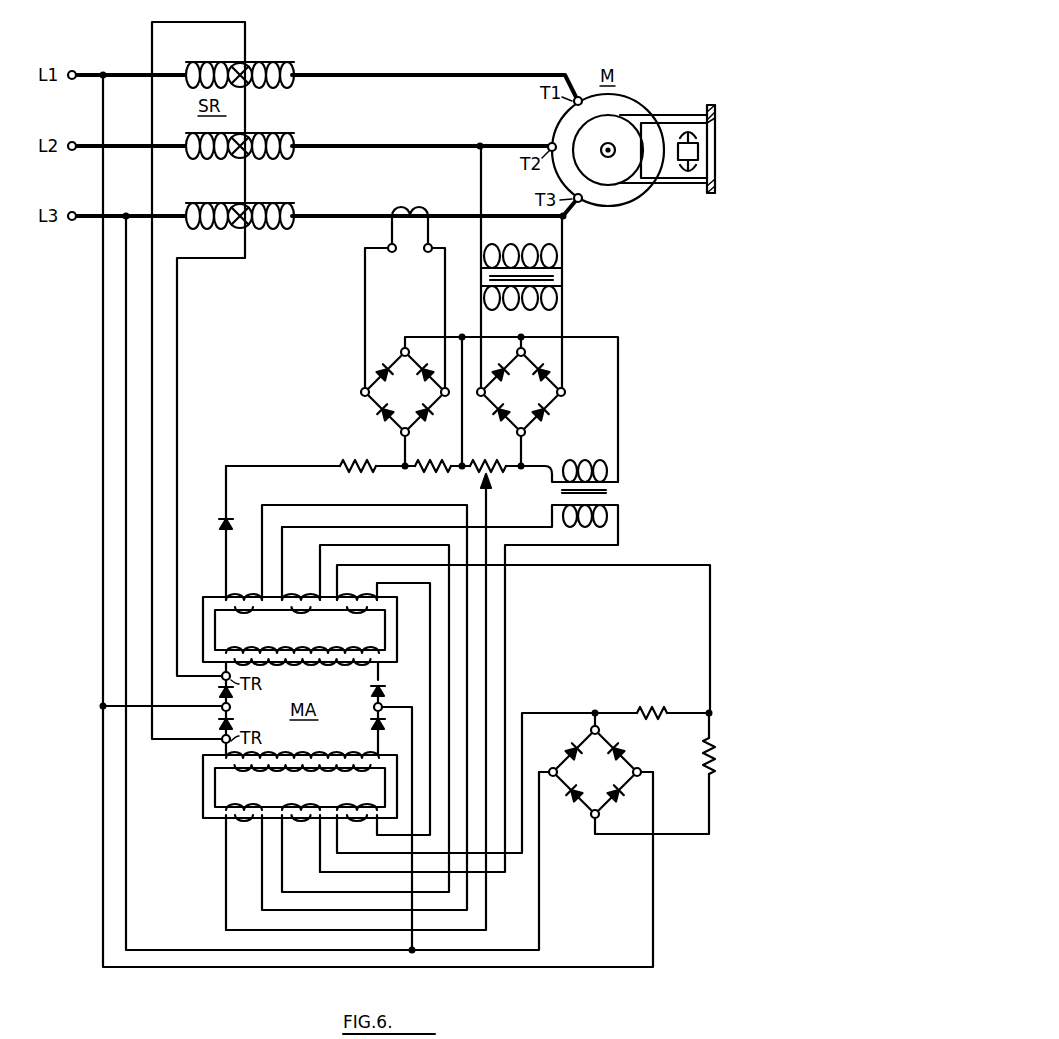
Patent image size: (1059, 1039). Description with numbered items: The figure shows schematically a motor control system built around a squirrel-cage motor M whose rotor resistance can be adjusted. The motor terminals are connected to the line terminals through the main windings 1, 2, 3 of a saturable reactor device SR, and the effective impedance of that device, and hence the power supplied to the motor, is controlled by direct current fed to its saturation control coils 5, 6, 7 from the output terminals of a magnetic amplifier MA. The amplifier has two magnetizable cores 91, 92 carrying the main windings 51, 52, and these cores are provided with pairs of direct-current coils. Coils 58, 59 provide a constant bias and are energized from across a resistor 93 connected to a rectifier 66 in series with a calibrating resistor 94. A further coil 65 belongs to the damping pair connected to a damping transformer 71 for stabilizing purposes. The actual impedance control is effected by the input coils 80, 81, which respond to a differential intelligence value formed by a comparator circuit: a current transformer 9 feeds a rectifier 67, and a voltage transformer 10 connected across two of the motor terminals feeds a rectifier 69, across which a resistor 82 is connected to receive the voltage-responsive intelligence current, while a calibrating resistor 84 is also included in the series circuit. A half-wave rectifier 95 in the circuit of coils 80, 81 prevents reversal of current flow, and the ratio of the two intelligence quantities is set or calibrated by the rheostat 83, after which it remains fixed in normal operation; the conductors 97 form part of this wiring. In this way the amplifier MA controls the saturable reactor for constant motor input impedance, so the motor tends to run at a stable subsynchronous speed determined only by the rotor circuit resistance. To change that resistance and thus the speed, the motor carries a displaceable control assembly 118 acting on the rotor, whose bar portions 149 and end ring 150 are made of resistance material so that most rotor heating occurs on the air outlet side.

The main winding 1 is at (289, 64).
The main winding 2 is at (292, 134).
The main winding 3 is at (292, 204).
The saturation control coil 5 is at (248, 95).
The saturation control coil 6 is at (248, 166).
The saturation control coil 7 is at (248, 236).
The current transformer 9 is at (404, 208).
The voltage transformer 10 is at (556, 278).
The main winding 51 is at (340, 668).
The main winding 52 is at (316, 752).
The direct-current coil 58 is at (362, 624).
The direct-current coil 59 is at (362, 788).
The direct-current coil 65 is at (316, 806).
The rectifier 66 is at (606, 782).
The rectifier 67 is at (416, 402).
The rectifier 69 is at (532, 402).
The damping transformer 71 is at (608, 492).
The direct-current input coil 80 is at (258, 622).
The direct-current input coil 81 is at (256, 806).
The resistor 82 is at (430, 480).
The rheostat 83 is at (494, 480).
The calibrating resistor 84 is at (352, 480).
The magnetizable core 91 is at (203, 640).
The magnetizable core 92 is at (203, 784).
The resistor 93 is at (642, 706).
The calibrating resistor 94 is at (714, 760).
The half-wave rectifier 95 is at (218, 524).
The conductors 97 is at (492, 912).
The displaceable control assembly 118 is at (698, 151).
The rotor bar portion 149 is at (660, 183).
The ring 150 is at (713, 104).